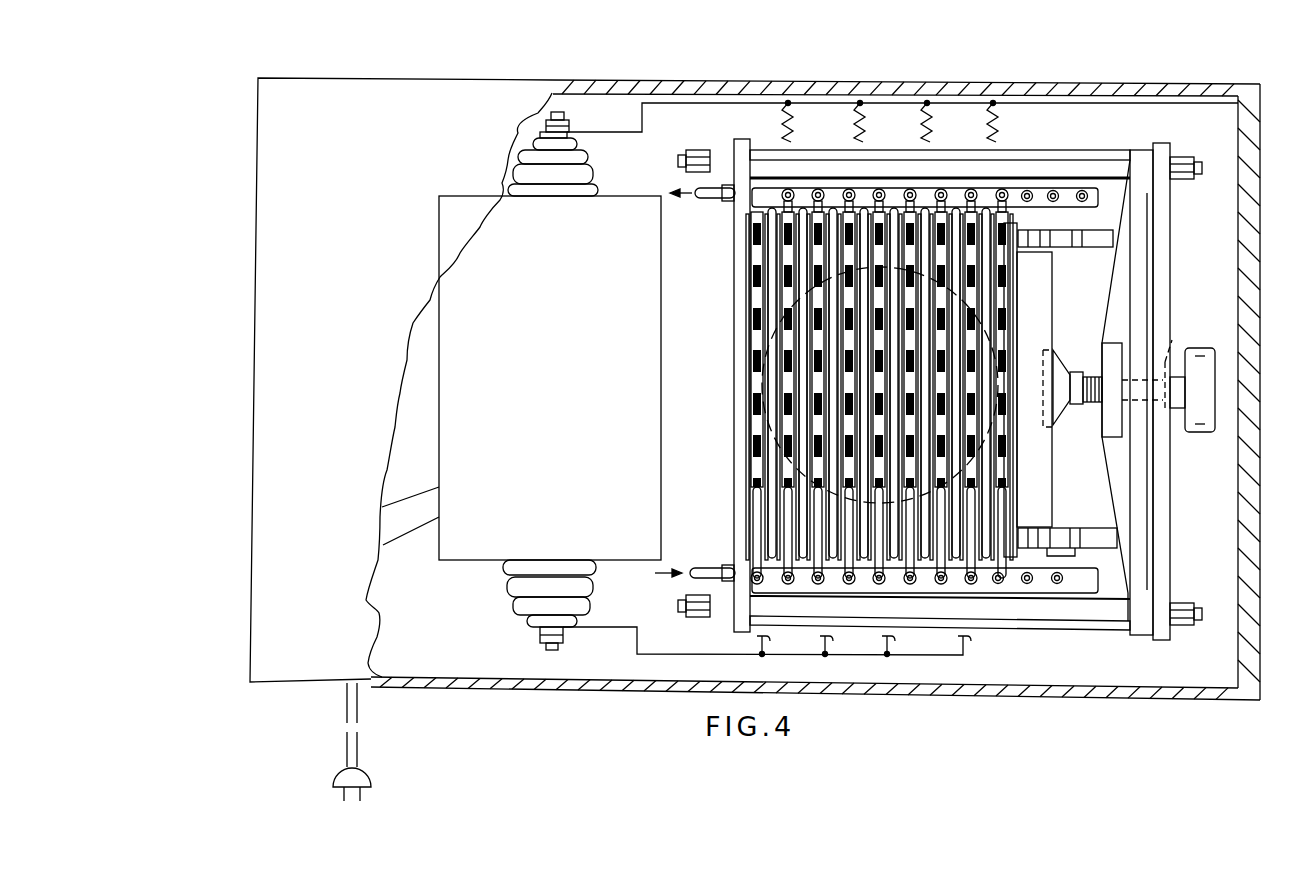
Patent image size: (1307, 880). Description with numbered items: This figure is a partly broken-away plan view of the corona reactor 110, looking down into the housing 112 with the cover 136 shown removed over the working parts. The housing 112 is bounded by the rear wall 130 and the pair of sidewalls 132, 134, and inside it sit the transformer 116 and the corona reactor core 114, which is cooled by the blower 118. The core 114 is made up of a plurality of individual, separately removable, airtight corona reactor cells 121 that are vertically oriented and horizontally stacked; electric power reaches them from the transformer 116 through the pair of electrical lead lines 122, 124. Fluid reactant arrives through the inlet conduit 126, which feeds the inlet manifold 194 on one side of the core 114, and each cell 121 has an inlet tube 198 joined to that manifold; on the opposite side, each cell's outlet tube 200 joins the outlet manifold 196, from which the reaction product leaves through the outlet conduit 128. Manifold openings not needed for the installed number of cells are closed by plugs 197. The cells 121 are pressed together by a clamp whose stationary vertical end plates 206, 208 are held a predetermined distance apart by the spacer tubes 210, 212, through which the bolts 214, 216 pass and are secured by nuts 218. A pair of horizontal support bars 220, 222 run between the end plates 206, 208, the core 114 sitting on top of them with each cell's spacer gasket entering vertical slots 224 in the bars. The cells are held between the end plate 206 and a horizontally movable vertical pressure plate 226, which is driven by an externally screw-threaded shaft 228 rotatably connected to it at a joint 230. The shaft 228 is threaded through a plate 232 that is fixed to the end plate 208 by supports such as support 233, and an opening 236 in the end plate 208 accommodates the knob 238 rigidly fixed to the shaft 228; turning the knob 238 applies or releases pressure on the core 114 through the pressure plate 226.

The corona reactor 110 is at (232, 295).
The housing 112 is at (258, 192).
The corona reactor core 114 is at (1038, 148).
The transformer 116 is at (550, 378).
The blower 118 is at (790, 467).
The corona reactor cells 121 is at (834, 190).
The electrical lead line 122 is at (629, 627).
The electrical lead line 124 is at (623, 133).
The inlet conduit 126 is at (696, 579).
The outlet conduit 128 is at (702, 200).
The rear wall 130 is at (1258, 362).
The sidewall 132 is at (1034, 700).
The sidewall 134 is at (983, 84).
The cover 136 is at (451, 385).
The inlet manifold 194 is at (766, 567).
The outlet manifold 196 is at (752, 212).
The plugs 197 is at (1055, 590).
The inlet tube 198 is at (913, 587).
The outlet tube 200 is at (930, 195).
The end plate 206 is at (734, 378).
The end plate 208 is at (1170, 572).
The spacer tube 210 is at (1090, 628).
The spacer tube 212 is at (1102, 158).
The bolt 214 is at (708, 605).
The bolt 216 is at (708, 160).
The nuts 218 is at (720, 150).
The horizontal support bar 220 is at (1090, 530).
The horizontal support bar 222 is at (1095, 246).
The vertical slots 224 is at (1075, 553).
The pressure plate 226 is at (1046, 326).
The screw-threaded shaft 228 is at (1085, 372).
The joint 230 is at (1052, 428).
The plate 232 is at (1102, 422).
The support 233 is at (1105, 297).
The opening 236 is at (1175, 362).
The knob 238 is at (1200, 433).